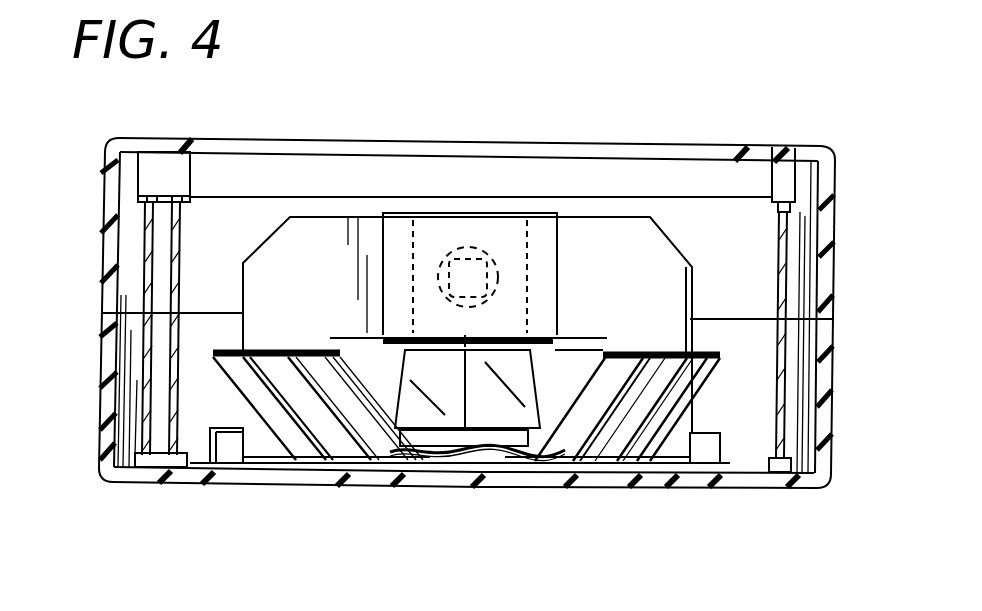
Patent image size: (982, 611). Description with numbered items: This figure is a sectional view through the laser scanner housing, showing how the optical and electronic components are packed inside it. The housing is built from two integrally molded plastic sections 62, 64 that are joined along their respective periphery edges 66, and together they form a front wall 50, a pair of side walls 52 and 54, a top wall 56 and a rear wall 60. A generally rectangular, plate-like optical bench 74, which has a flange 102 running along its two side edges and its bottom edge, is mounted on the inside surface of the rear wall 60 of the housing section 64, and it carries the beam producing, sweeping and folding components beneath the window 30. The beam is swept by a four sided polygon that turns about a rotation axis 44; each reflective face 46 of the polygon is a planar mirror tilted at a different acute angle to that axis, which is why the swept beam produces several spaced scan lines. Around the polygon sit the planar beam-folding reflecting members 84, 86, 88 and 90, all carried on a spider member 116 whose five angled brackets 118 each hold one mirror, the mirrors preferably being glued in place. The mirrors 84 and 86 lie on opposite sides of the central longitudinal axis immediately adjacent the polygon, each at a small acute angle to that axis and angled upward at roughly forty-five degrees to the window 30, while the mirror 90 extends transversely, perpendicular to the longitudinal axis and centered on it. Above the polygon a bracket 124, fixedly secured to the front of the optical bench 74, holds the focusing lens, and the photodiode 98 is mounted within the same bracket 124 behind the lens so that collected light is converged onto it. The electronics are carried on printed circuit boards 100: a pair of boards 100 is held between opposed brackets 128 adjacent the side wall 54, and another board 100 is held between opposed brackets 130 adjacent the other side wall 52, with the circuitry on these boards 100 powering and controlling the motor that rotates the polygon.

The window 30 is at (262, 141).
The rotation axis 44 is at (468, 333).
The face 46 is at (394, 383).
The front wall 50 is at (182, 140).
The side wall 52 is at (820, 252).
The side wall 54 is at (104, 258).
The top wall 56 is at (736, 252).
The rear wall 60 is at (420, 480).
The housing section 62 is at (96, 201).
The housing section 64 is at (94, 488).
The periphery edges 66 is at (212, 306).
The optical bench 74 is at (240, 478).
The beam-folding reflecting member 84 is at (210, 350).
The beam-folding reflecting member 86 is at (722, 362).
The beam-folding reflecting member 88 is at (296, 348).
The beam-folding reflecting member 90 is at (707, 352).
The photodiode 98 is at (478, 242).
The printed circuit board 100 is at (820, 344).
The flange 102 is at (200, 476).
The spider member 116 is at (520, 478).
The angled brackets 118 is at (672, 352).
The bracket 124 is at (577, 228).
The opposed brackets 128 is at (172, 173).
The opposed brackets 130 is at (786, 153).